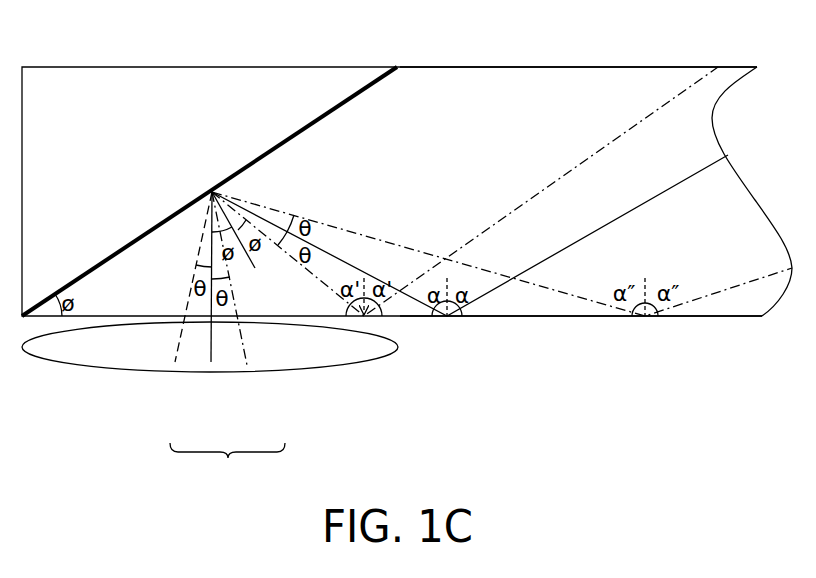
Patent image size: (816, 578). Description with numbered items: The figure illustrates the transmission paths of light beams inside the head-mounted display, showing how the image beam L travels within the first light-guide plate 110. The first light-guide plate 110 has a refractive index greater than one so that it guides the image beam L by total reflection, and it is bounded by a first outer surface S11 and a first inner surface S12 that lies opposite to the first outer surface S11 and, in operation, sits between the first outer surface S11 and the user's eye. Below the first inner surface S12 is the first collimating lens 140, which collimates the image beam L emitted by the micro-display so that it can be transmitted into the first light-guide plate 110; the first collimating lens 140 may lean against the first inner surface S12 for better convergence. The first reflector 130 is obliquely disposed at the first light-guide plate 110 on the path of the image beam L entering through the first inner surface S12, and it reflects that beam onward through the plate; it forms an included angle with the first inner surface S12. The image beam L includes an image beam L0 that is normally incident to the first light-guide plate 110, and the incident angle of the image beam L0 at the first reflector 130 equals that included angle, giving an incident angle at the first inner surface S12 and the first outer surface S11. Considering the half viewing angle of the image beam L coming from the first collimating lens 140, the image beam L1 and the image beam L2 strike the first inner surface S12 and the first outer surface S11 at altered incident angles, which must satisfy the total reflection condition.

The first light-guide plate 110 is at (482, 90).
The first reflector 130 is at (364, 88).
The first collimating lens 140 is at (87, 372).
The first outer surface S11 is at (692, 66).
The first inner surface S12 is at (693, 318).
The image beam L0 is at (211, 358).
The image beam L1 is at (245, 352).
The image beam L2 is at (175, 362).
The image beam L is at (227, 467).